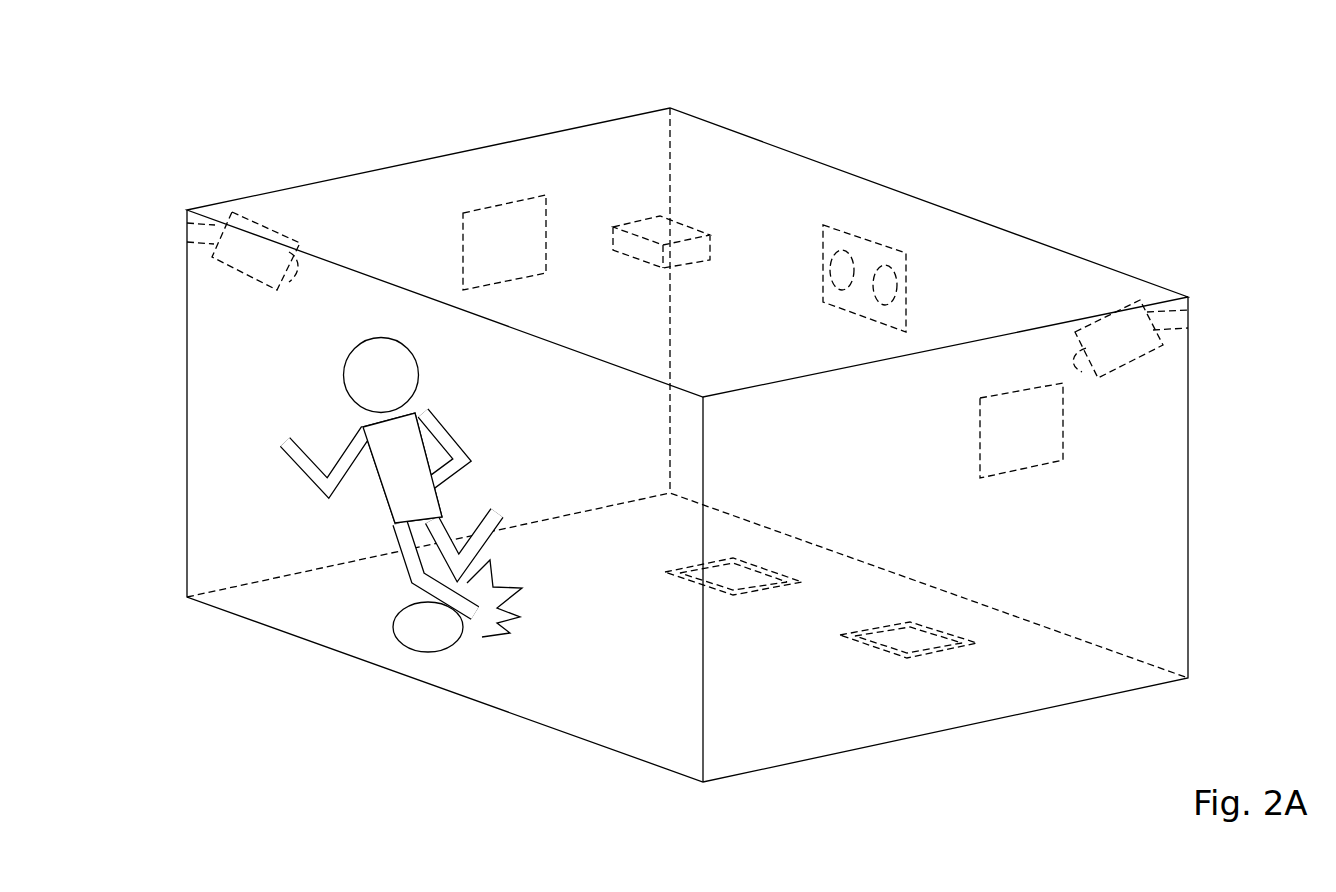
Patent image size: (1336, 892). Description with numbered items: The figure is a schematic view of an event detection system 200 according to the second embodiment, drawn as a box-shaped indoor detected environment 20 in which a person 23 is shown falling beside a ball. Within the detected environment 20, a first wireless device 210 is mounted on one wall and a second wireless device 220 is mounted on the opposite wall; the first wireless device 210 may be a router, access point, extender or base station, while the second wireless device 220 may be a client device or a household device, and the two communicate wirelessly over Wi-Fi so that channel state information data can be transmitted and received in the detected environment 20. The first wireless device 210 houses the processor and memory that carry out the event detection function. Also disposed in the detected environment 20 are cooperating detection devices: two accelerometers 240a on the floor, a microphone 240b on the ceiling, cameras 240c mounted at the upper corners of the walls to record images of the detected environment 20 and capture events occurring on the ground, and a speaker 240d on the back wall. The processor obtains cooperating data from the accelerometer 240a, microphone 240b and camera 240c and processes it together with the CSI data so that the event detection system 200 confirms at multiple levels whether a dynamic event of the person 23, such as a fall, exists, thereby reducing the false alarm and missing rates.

The event detection system 200 is at (712, 414).
The detected environment 20 is at (575, 692).
The person 23 is at (390, 483).
The first wireless device 210 is at (1035, 447).
The second wireless device 220 is at (489, 227).
The accelerometer 240a is at (725, 573).
The microphone 240b is at (687, 232).
The camera 240c is at (245, 252).
The speaker 240d is at (867, 250).